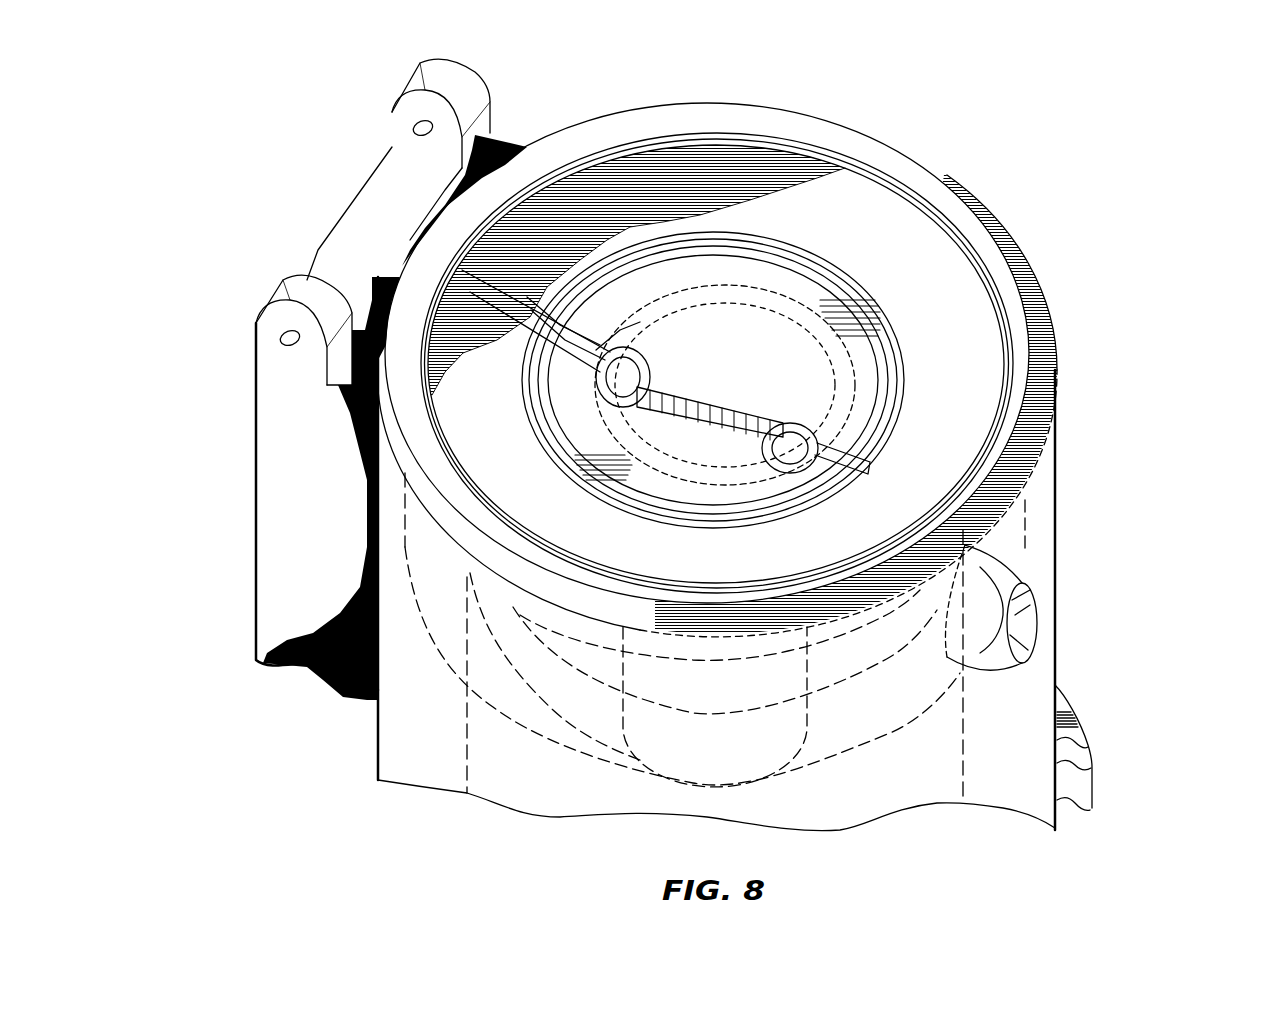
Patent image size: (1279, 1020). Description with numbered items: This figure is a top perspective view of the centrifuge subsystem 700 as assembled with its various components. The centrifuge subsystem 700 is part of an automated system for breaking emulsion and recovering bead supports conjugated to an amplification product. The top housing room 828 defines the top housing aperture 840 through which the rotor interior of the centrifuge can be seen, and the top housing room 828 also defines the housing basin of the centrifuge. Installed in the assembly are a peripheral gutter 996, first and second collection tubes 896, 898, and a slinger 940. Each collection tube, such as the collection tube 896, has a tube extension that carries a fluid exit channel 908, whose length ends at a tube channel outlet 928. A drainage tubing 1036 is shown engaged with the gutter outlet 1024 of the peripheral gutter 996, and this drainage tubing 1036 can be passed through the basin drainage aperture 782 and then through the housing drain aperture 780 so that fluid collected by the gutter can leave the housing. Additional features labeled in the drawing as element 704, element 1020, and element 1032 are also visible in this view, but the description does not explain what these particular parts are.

The centrifuge subsystem 700 is at (270, 719).
The housing body 704 is at (1055, 480).
The housing drain aperture 780 is at (1037, 615).
The basin drainage aperture 782 is at (1037, 562).
The top housing room 828 is at (1055, 383).
The top housing aperture 840 is at (1055, 423).
The collection tube 896 is at (640, 387).
The second collection tube 898 is at (783, 503).
The fluid exit channel 908 is at (670, 233).
The tube channel outlet 928 is at (460, 268).
The slinger 940 is at (670, 480).
The peripheral gutter 996 is at (870, 150).
The clamp ring 1020 is at (583, 233).
The gutter outlet 1024 is at (1027, 527).
The chamfer 1032 is at (1050, 313).
The drainage tubing 1036 is at (1017, 673).